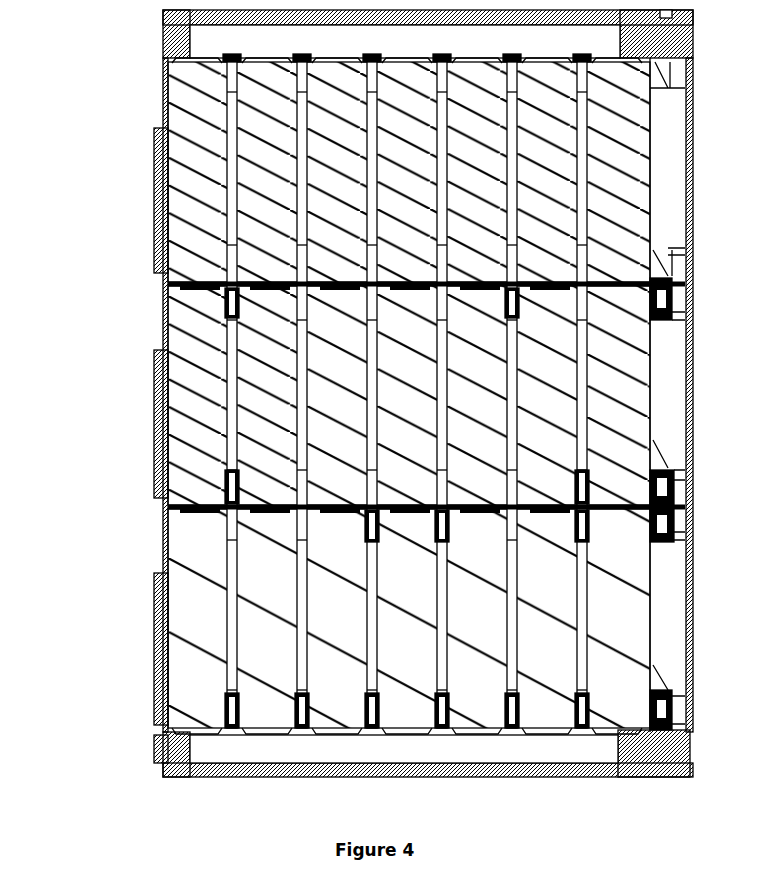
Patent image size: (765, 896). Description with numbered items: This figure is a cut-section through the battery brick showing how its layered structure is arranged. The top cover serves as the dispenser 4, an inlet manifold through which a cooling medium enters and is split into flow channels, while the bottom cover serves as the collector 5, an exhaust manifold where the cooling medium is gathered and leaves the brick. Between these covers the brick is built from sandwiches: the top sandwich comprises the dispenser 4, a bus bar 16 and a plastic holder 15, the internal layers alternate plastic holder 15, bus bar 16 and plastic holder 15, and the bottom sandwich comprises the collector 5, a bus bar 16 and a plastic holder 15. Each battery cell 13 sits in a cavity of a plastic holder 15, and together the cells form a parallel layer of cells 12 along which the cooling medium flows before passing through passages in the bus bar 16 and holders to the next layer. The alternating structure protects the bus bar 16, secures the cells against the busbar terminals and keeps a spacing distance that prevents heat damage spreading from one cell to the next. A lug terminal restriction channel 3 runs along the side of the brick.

The lug terminal restriction channel 3 is at (160, 540).
The dispenser 4 is at (180, 40).
The collector 5 is at (182, 757).
The parallel layer of cells 12 is at (355, 380).
The battery cell 13 is at (195, 138).
The plastic holder 15 is at (227, 710).
The bus bar 16 is at (202, 508).